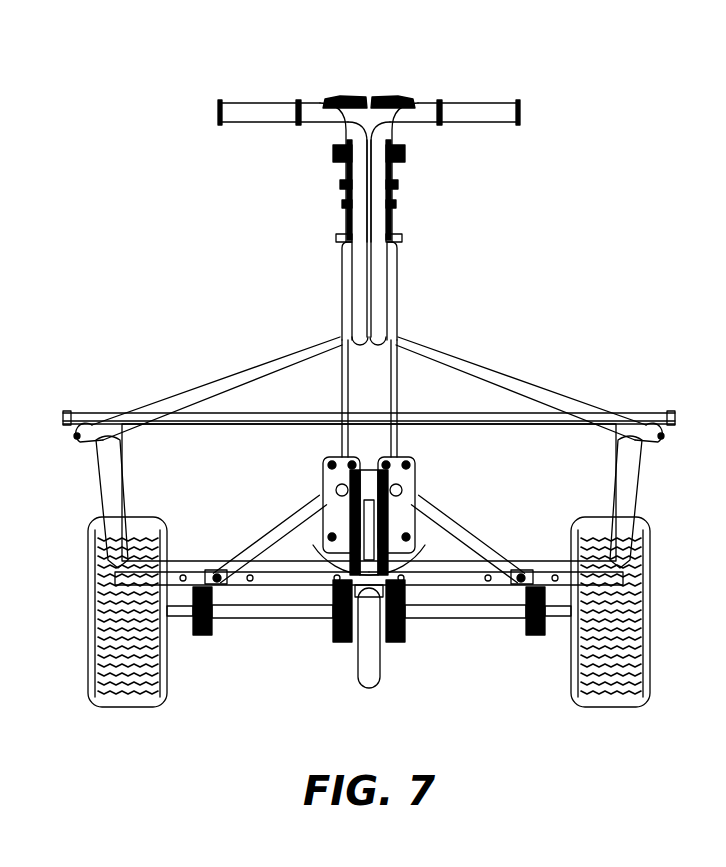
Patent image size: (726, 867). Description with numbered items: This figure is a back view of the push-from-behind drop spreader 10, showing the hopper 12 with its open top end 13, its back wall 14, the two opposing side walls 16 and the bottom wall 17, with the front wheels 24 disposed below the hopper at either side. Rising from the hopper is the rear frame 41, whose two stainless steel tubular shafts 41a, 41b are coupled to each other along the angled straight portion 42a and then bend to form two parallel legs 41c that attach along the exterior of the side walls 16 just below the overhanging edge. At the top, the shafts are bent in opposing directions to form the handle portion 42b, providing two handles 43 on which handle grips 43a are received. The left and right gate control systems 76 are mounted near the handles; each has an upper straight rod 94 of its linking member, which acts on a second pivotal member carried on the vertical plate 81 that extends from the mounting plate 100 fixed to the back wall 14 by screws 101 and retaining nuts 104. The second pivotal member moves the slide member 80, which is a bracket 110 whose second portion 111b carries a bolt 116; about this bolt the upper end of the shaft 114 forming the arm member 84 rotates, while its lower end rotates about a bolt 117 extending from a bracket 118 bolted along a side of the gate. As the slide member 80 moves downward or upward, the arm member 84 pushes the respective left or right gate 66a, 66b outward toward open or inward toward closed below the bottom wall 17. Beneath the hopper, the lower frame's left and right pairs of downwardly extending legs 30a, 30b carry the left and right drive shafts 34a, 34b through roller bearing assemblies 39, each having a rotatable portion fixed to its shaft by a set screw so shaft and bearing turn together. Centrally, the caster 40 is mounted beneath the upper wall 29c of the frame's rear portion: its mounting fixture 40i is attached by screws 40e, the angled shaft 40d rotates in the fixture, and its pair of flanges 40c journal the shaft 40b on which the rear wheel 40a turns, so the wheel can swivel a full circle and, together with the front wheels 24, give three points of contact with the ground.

The drop spreader 10 is at (657, 49).
The hopper 12 is at (673, 411).
The open top end 13 is at (65, 411).
The back wall 14 is at (165, 452).
The side walls 16 is at (100, 488).
The bottom wall 17 is at (125, 576).
The wheels 24 is at (88, 682).
The upper wall 29c is at (338, 540).
The left pair of downwardly extending legs 30a is at (398, 640).
The right pair of downwardly extending legs 30b is at (208, 636).
The left drive shaft 34a is at (512, 620).
The right drive shaft 34b is at (270, 620).
The roller bearing assembly 39 is at (198, 636).
The caster 40 is at (380, 688).
The wheel 40a is at (370, 688).
The shaft 40b is at (346, 642).
The flanges 40c is at (394, 642).
The angled shaft 40d is at (415, 620).
The screws 40e is at (333, 600).
The mounting fixture 40i is at (400, 540).
The rear frame 41 is at (397, 304).
The tubular shaft 41a is at (392, 282).
The tubular shaft 41b is at (346, 288).
The legs 41c is at (80, 444).
The angled straight portion 42a is at (398, 238).
The handle portion 42b is at (404, 125).
The handles 43 is at (250, 103).
The handle grips 43a is at (246, 122).
The left gate 66a is at (472, 586).
The right gate 66b is at (270, 586).
The gate control system 76 is at (356, 97).
The slide member 80 is at (336, 490).
The vertical plate 81 is at (362, 457).
The arm member 84 is at (230, 540).
The upper straight rod 94 is at (342, 325).
The mounting plate 100 is at (236, 428).
The screws 101 is at (330, 465).
The retaining nuts 104 is at (335, 460).
The bracket 110 is at (332, 505).
The second portion 111b is at (320, 456).
The shaft 114 is at (225, 550).
The bolt 116 is at (323, 466).
The bolt 117 is at (215, 560).
The bracket 118 is at (200, 570).